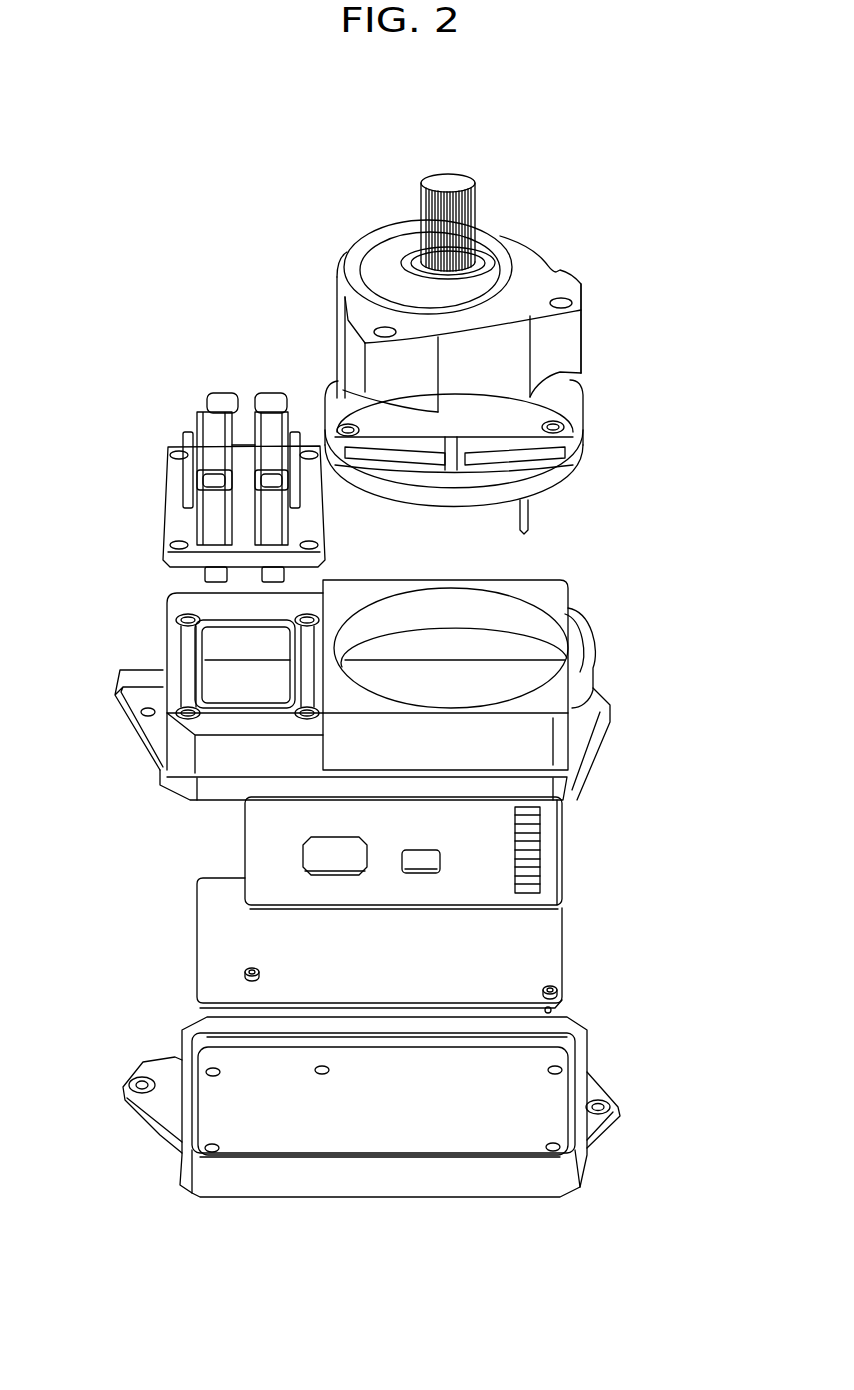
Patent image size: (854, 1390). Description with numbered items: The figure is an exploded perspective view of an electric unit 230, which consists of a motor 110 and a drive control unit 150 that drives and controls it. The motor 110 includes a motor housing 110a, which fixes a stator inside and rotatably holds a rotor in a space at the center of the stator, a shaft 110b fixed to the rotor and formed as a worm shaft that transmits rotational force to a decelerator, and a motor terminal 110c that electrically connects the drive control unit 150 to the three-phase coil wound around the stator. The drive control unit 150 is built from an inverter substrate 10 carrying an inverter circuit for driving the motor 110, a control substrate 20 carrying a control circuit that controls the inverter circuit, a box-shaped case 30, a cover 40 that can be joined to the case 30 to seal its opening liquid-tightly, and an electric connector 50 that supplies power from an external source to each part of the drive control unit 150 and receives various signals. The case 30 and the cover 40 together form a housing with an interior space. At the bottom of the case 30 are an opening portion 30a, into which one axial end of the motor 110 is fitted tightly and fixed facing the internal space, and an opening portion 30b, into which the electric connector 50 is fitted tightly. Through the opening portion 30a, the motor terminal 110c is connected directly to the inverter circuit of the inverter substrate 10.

The electric unit 230 is at (241, 207).
The motor 110 is at (536, 246).
The motor housing 110a is at (583, 330).
The shaft 110b is at (470, 174).
The motor terminal 110c is at (528, 505).
The electric connector 50 is at (325, 512).
The drive control unit 150 is at (680, 582).
The case 30 is at (600, 673).
The opening portion 30a is at (572, 612).
The opening portion 30b is at (190, 625).
The control substrate 20 is at (565, 830).
The inverter substrate 10 is at (560, 952).
The cover 40 is at (583, 1163).